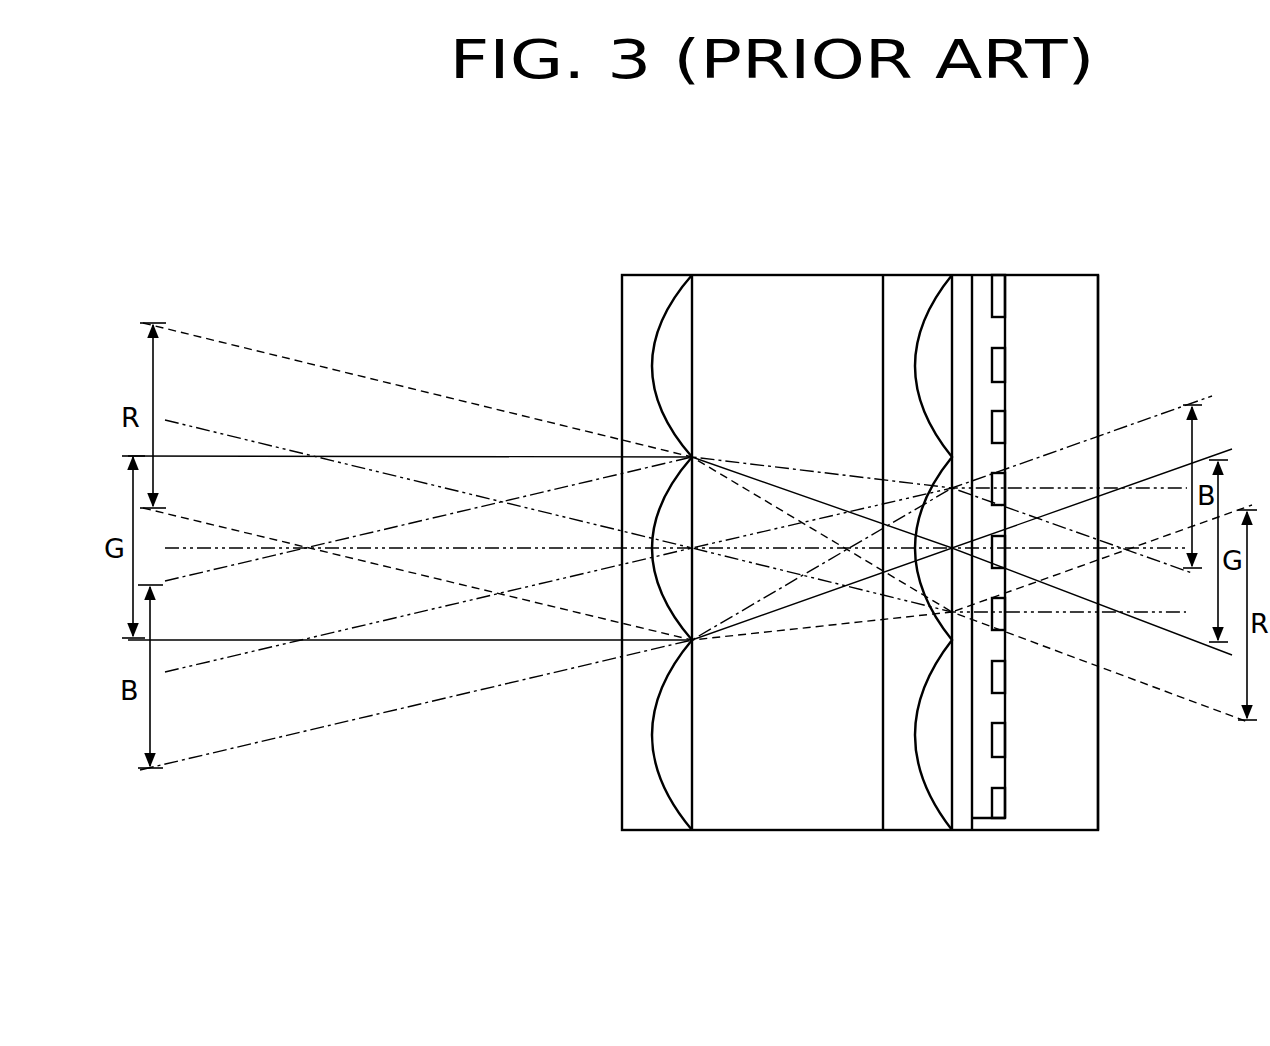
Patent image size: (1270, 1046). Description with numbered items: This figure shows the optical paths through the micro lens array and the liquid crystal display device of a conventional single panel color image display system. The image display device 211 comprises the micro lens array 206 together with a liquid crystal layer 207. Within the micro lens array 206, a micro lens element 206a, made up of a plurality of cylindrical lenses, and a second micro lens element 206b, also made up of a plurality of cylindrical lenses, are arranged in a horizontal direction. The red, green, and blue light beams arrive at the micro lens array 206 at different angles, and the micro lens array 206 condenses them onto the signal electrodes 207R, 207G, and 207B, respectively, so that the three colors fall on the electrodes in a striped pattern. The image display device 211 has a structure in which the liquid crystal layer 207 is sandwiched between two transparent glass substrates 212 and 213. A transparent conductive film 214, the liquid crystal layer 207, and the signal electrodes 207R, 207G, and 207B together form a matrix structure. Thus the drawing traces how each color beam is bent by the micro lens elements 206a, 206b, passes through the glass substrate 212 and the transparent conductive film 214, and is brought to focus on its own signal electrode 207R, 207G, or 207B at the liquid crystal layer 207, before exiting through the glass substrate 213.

The micro lens array 206 is at (643, 174).
The micro lens element 206a is at (672, 292).
The micro lens element 206b is at (935, 292).
The image display device 211 is at (620, 838).
The transparent glass substrate 212 is at (893, 284).
The transparent conductive film 214 is at (967, 288).
The liquid crystal layer 207 is at (996, 292).
The signal electrode 207B is at (1010, 488).
The signal electrode 207G is at (1010, 568).
The signal electrode 207R is at (1010, 630).
The transparent glass substrate 213 is at (1056, 290).